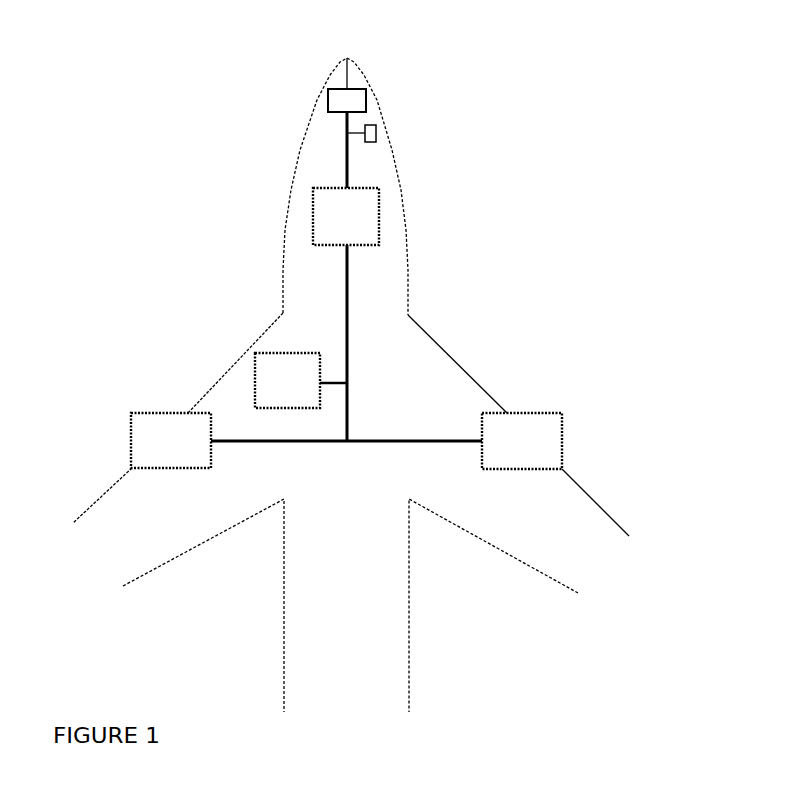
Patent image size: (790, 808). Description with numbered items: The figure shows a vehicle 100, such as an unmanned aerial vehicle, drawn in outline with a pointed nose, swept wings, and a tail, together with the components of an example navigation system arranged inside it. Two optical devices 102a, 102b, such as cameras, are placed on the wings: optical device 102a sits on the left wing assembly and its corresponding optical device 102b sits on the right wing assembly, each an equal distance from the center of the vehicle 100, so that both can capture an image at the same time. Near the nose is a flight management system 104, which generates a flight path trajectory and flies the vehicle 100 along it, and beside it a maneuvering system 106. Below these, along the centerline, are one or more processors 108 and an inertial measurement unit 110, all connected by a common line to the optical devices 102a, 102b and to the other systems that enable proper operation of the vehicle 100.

The vehicle 100 is at (601, 76).
The optical device 102a is at (202, 452).
The optical device 102b is at (553, 452).
The flight management system 104 is at (328, 102).
The maneuvering system 106 is at (377, 134).
The processor 108 is at (369, 228).
The inertial measurement unit 110 is at (310, 392).